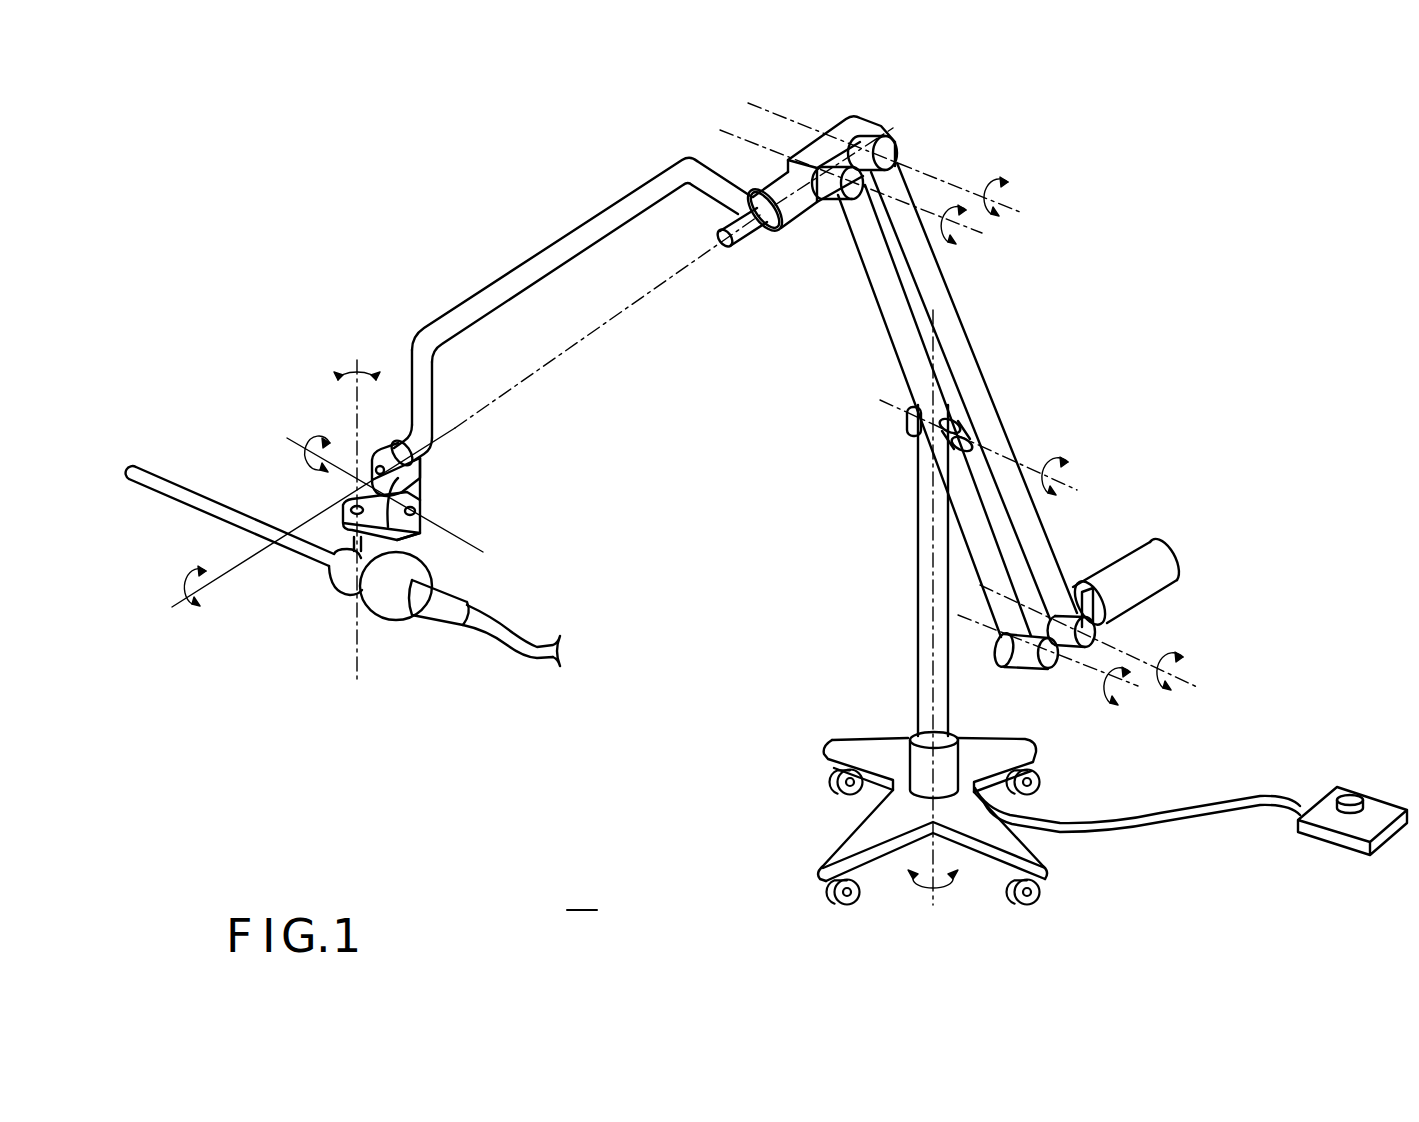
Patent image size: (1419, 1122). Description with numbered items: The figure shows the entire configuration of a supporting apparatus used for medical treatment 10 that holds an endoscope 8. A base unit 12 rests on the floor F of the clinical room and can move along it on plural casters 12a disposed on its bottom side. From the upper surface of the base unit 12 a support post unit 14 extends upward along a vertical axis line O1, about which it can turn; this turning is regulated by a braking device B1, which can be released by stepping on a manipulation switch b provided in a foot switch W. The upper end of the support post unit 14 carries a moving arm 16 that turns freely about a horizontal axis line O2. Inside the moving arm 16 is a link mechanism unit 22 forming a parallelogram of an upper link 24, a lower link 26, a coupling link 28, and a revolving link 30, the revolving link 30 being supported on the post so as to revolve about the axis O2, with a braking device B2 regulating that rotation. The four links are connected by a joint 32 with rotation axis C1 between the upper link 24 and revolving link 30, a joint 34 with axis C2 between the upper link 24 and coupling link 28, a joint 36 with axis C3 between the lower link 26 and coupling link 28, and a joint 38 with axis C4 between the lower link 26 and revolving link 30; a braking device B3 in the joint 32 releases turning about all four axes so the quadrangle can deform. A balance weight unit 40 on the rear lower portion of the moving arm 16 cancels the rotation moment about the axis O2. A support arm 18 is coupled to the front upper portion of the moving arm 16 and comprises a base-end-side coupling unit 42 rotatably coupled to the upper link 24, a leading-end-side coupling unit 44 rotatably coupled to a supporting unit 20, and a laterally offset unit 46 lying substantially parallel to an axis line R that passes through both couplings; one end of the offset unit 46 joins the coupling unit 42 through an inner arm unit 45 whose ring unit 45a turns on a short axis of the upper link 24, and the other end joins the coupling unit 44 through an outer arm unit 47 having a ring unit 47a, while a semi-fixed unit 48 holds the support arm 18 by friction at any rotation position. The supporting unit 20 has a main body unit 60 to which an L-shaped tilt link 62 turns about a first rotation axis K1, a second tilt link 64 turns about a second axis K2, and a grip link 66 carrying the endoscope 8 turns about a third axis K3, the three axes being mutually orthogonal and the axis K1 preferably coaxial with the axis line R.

The endoscope 8 is at (387, 612).
The supporting apparatus used for medical treatment 10 is at (1118, 158).
The base unit 12 is at (852, 838).
The casters 12a is at (830, 893).
The support post unit 14 is at (917, 597).
The moving arm 16 is at (1130, 300).
The support arm 18 is at (648, 392).
The supporting unit 20 is at (308, 350).
The link mechanism unit 22 is at (1048, 396).
The upper link 24 is at (858, 122).
The lower link 26 is at (1003, 665).
The coupling link 28 is at (968, 345).
The revolving link 30 is at (890, 315).
The joint 32 is at (846, 200).
The joint 34 is at (898, 151).
The joint 36 is at (1097, 636).
The joint 38 is at (1045, 668).
The balance weight unit 40 is at (1166, 566).
The base-end-side coupling unit 42 is at (792, 230).
The leading-end-side coupling unit 44 is at (438, 470).
The inner arm unit 45 is at (712, 205).
The ring unit 45a is at (749, 237).
The offset unit 46 is at (530, 267).
The outer arm unit 47 is at (433, 382).
The ring unit 47a is at (408, 438).
The semi-fixed unit 48 is at (729, 256).
The main body unit 60 is at (385, 452).
The tilt link 62 is at (425, 492).
The tilt link 64 is at (345, 512).
The grip link 66 is at (333, 548).
The braking device B1 is at (908, 757).
The braking device B2 is at (908, 418).
The braking device B3 is at (838, 165).
The rotation axis C1 is at (869, 191).
The rotation axis C2 is at (903, 163).
The rotation axis C3 is at (1107, 645).
The rotation axis C4 is at (1065, 672).
The first rotation axis K1 is at (237, 560).
The second turning axis K2 is at (480, 540).
The third rotation axis K3 is at (350, 662).
The vertical axis line O1 is at (933, 628).
The horizontal axis line O2 is at (999, 453).
The axis line R is at (565, 352).
The manipulation switch b is at (1352, 795).
The foot switch W is at (1380, 800).
The floor F is at (582, 895).